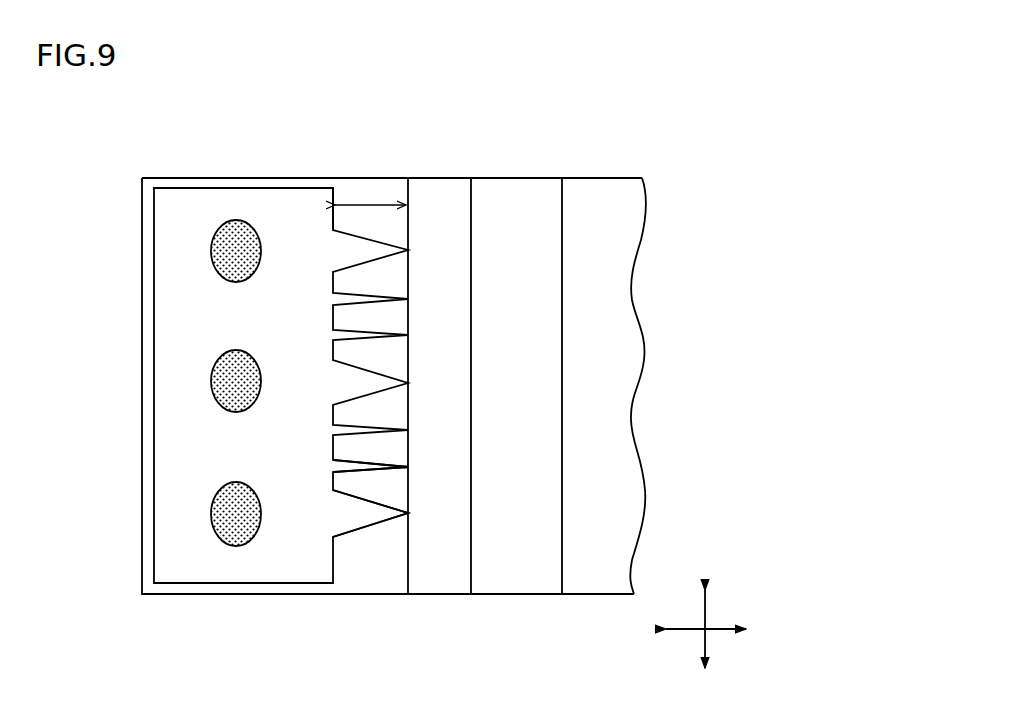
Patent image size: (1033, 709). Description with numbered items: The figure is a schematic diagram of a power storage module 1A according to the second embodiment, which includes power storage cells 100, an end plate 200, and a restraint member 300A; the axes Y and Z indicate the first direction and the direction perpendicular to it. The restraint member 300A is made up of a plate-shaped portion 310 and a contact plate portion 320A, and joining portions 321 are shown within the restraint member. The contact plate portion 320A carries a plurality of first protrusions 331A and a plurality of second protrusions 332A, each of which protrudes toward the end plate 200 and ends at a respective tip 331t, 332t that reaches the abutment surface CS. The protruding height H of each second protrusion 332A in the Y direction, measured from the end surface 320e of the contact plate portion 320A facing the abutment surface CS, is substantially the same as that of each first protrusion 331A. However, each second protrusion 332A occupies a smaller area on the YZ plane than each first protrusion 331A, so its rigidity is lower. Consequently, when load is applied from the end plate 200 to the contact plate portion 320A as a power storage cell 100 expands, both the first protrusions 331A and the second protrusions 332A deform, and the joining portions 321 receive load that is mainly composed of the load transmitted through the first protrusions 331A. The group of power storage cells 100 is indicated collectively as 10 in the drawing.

The power storage module 1A is at (174, 148).
The restraint member 300A is at (320, 124).
The plate-shaped portion 310 is at (229, 187).
The contact plate portion 320A is at (291, 204).
The joining portion 321 is at (232, 532).
The end surface 320e is at (334, 186).
The second protrusion 332A is at (334, 473).
The first protrusion 331A is at (364, 514).
The tip of second protrusion 332t is at (410, 465).
The tip of first protrusion 331t is at (410, 512).
The protruding height H is at (369, 204).
The abutment surface CS is at (408, 176).
The end plate 200 is at (437, 204).
The display panel 10 is at (627, 124).
The power storage cell 100 is at (515, 204).
The Z direction Z is at (703, 607).
The Y direction Y is at (722, 627).